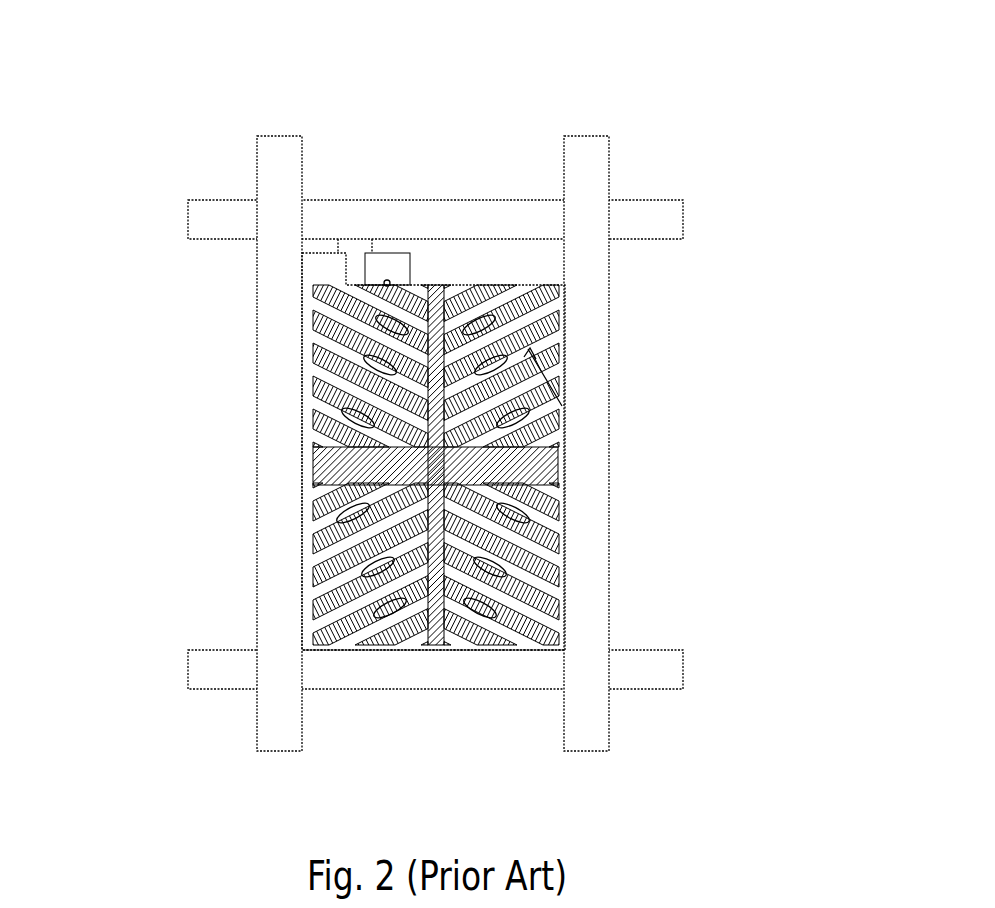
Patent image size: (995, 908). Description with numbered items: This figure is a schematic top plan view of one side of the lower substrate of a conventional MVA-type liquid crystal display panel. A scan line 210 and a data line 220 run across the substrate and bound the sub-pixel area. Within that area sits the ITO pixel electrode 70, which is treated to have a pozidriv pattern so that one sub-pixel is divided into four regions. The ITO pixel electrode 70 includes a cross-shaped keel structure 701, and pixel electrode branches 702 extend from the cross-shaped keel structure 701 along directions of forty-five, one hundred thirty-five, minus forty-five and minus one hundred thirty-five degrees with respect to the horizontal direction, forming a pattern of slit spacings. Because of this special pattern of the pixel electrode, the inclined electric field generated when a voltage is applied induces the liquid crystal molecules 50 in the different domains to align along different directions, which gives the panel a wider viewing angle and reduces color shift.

The scan line 210 is at (208, 224).
The data line 220 is at (272, 165).
The liquid crystal molecules 50 is at (498, 320).
The ITO pixel electrode 70 is at (545, 464).
The cross-shaped keel structure 701 is at (557, 467).
The pixel electrode branches 702 is at (557, 550).